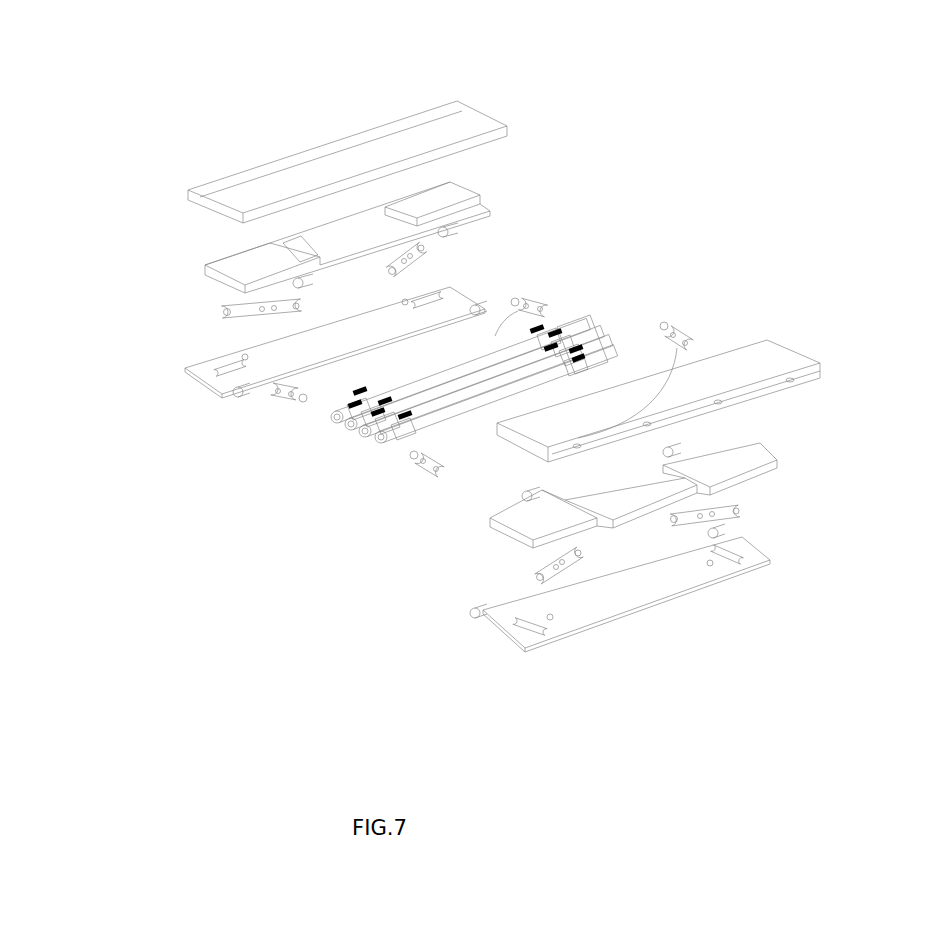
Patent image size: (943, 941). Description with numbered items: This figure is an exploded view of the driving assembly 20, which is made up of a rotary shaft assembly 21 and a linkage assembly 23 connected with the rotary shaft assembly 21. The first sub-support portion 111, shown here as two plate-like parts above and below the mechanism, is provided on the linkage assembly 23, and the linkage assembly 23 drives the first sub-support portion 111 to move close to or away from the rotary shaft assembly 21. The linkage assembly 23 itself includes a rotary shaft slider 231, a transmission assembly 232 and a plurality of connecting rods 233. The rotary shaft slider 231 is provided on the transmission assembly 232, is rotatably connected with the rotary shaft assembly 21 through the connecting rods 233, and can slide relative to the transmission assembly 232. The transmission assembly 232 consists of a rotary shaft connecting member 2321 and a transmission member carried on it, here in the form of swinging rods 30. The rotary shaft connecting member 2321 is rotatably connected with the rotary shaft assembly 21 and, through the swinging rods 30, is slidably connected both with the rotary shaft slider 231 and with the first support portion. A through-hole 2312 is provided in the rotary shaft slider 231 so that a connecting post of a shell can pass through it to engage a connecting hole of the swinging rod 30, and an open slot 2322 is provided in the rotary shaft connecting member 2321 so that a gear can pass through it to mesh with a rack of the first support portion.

The driving assembly 20 is at (467, 62).
The first sub-support portion 111 is at (281, 188).
The rotary shaft assembly 21 is at (594, 325).
The linkage assembly 23 is at (57, 257).
The rotary shaft slider 231 is at (208, 370).
The through-hole 2312 is at (428, 300).
The transmission assembly 232 is at (122, 212).
The rotary shaft connecting member 2321 is at (247, 258).
The open slot 2322 is at (288, 250).
The swinging rod 30 is at (238, 306).
The connecting rods 233 is at (297, 398).